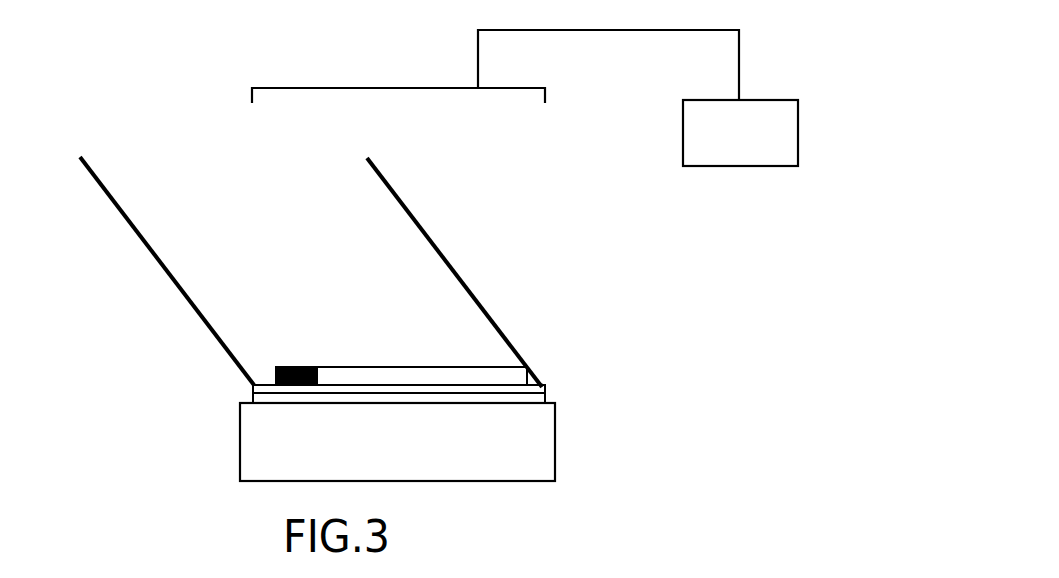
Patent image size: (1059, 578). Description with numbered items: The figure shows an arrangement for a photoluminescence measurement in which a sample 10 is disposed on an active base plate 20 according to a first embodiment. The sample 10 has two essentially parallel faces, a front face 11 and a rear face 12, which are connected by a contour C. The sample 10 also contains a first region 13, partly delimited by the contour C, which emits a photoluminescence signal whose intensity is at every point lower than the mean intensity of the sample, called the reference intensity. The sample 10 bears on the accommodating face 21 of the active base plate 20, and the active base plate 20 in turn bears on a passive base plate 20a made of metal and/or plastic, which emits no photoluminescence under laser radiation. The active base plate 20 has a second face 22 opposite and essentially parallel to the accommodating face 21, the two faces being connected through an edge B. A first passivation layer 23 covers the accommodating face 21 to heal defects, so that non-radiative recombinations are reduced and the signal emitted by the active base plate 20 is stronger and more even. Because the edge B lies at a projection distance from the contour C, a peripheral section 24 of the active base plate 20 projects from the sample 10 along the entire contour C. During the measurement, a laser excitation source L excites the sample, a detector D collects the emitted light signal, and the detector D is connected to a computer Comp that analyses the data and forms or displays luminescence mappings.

The sample 10 is at (403, 367).
The front face 11 is at (433, 367).
The rear face 12 is at (440, 386).
The first region 13 is at (295, 367).
The active base plate 20 is at (457, 385).
The passive base plate 20a is at (556, 433).
The accommodating face 21 is at (513, 385).
The second face 22 is at (528, 403).
The first passivation layer 23 is at (546, 388).
The peripheral section 24 is at (258, 385).
The edge B is at (253, 394).
The contour C is at (543, 382).
The laser excitation source L is at (132, 229).
The detector D is at (250, 95).
The computer Comp is at (798, 144).